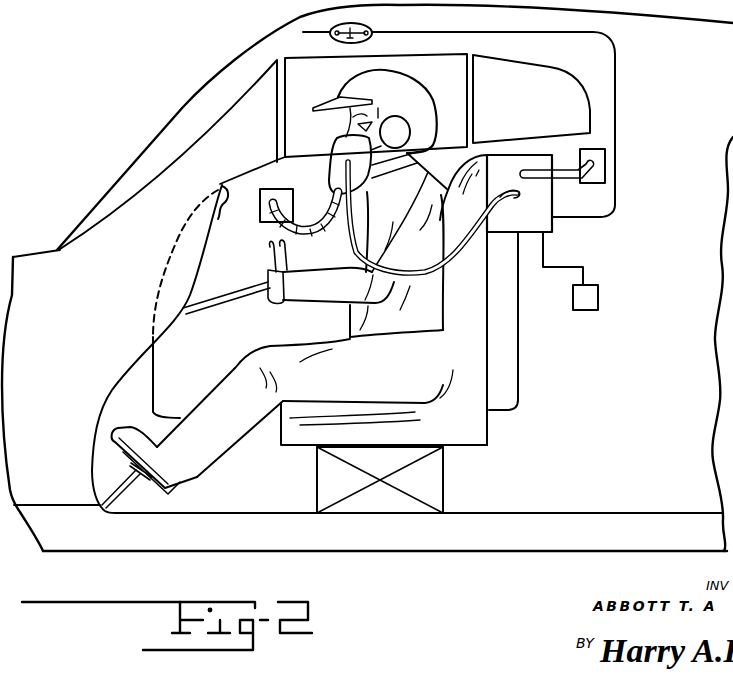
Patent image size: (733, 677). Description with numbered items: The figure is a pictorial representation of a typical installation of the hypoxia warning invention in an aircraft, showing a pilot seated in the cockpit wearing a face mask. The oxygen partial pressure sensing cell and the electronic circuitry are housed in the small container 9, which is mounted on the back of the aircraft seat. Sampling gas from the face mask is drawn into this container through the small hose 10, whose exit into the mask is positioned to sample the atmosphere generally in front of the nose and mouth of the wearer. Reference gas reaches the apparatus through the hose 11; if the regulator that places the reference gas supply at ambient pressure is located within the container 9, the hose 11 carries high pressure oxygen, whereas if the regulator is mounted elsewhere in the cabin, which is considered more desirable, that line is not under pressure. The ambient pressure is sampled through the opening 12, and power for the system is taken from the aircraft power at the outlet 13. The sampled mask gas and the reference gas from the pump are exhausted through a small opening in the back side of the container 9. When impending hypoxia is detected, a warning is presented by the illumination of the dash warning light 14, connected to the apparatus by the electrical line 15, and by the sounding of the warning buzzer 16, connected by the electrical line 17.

The small container 9 is at (512, 154).
The small hose 10 is at (457, 263).
The hose 11 is at (560, 183).
The opening 12 is at (508, 210).
The outlet 13 is at (600, 293).
The dash warning light 14 is at (228, 211).
The electrical line 15 is at (156, 377).
The warning buzzer 16 is at (373, 37).
The electrical line 17 is at (616, 93).